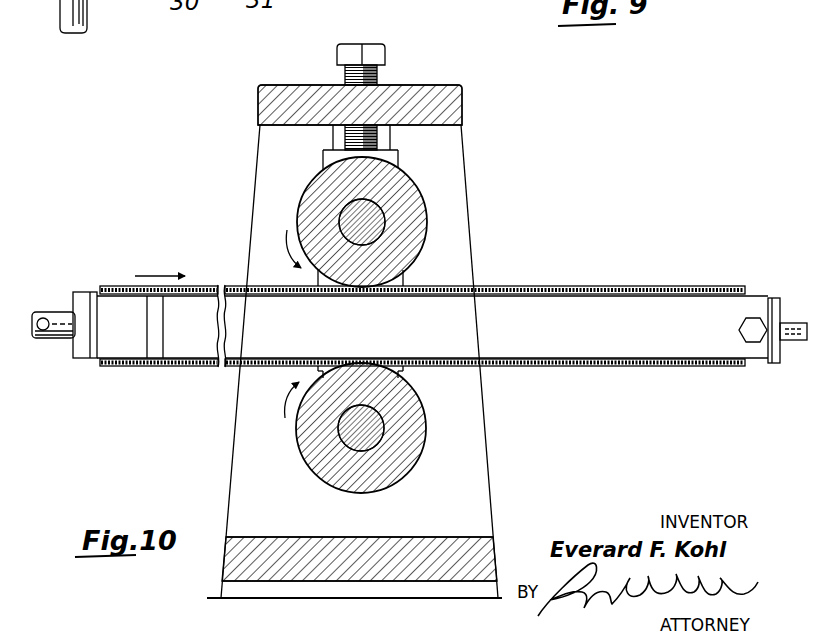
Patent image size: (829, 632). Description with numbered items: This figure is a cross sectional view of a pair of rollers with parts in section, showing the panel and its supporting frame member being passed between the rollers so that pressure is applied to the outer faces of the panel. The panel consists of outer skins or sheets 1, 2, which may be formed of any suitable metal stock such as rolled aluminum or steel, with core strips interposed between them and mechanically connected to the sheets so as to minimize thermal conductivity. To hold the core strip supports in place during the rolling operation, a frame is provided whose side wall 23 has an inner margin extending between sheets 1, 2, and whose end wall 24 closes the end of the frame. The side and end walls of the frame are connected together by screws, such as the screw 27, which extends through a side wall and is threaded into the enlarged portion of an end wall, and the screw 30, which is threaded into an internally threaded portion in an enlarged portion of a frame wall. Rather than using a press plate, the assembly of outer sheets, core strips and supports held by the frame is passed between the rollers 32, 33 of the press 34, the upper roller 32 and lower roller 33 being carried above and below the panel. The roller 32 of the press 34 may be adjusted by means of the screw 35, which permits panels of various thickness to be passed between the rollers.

The outer sheet 1 is at (207, 285).
The outer sheet 2 is at (174, 367).
The side wall 23 is at (588, 315).
The end wall 24 is at (82, 349).
The screw 27 is at (754, 317).
The screw 30 is at (63, 311).
The roller 32 is at (426, 195).
The roller 33 is at (427, 423).
The press 34 is at (460, 95).
The screw 35 is at (381, 52).